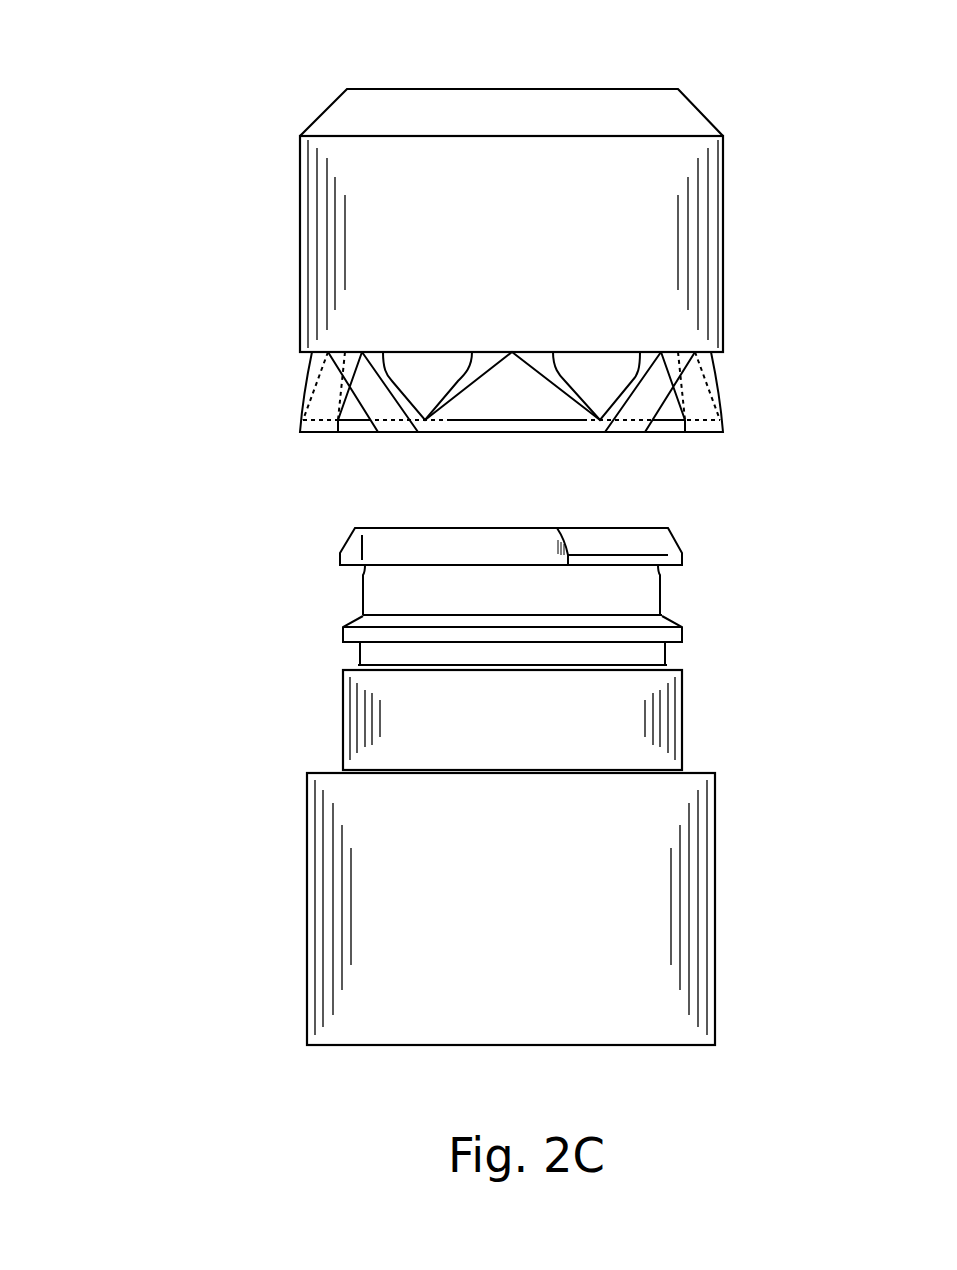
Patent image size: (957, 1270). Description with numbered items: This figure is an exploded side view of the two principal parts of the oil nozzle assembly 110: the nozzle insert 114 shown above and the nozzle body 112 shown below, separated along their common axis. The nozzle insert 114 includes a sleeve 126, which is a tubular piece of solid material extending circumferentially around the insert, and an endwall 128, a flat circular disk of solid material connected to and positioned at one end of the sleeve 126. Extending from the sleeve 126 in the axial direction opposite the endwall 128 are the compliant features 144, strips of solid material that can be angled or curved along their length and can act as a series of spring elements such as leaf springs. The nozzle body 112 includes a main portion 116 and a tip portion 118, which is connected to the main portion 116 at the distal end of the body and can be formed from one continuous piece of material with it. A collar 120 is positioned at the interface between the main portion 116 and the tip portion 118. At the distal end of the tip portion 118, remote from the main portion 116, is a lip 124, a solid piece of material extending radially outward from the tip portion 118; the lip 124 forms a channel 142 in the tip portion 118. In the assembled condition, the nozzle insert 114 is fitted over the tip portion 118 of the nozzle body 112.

The oil nozzle assembly 110 is at (125, 280).
The nozzle body 112 is at (300, 915).
The nozzle insert 114 is at (733, 181).
The main portion 116 is at (748, 772).
The tip portion 118 is at (745, 525).
The collar 120 is at (323, 772).
The lip 124 is at (685, 560).
The sleeve 126 is at (300, 222).
The endwall 128 is at (513, 88).
The channel 142 is at (350, 612).
The compliant features 144 is at (307, 393).